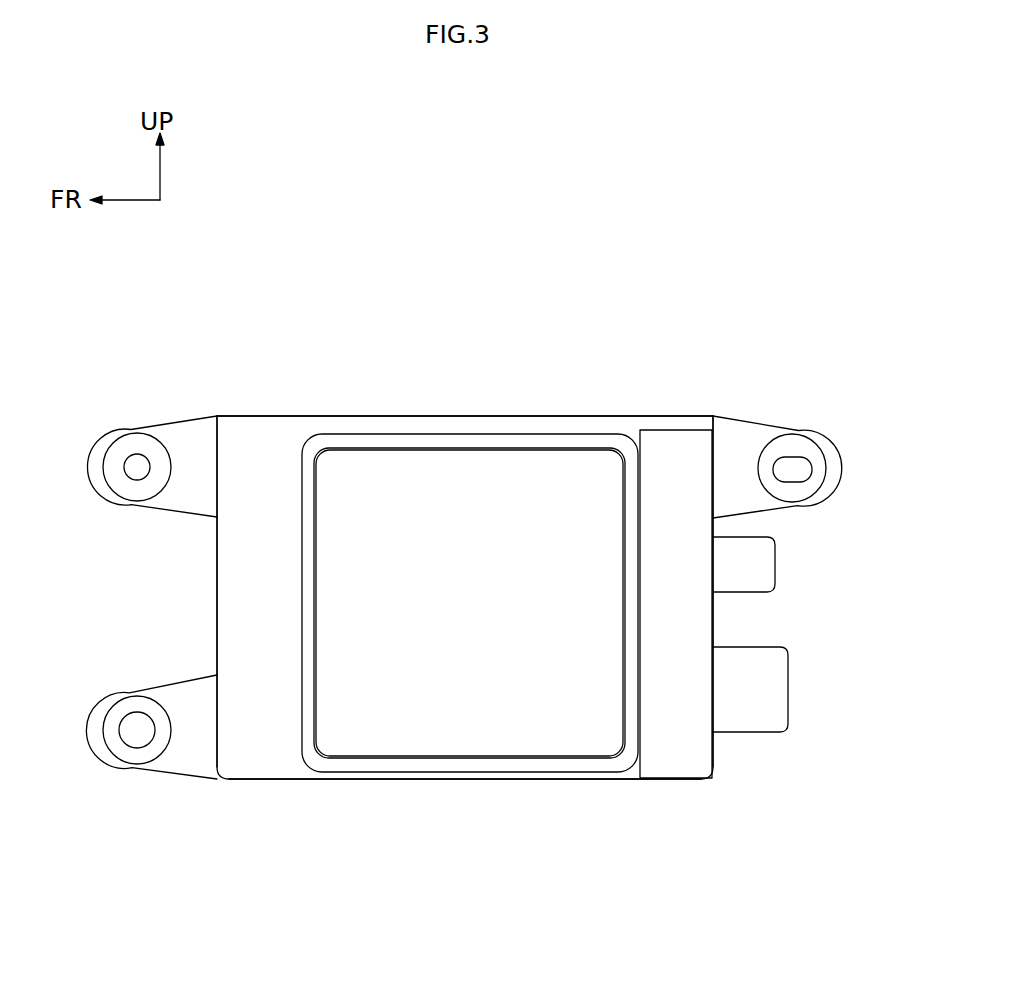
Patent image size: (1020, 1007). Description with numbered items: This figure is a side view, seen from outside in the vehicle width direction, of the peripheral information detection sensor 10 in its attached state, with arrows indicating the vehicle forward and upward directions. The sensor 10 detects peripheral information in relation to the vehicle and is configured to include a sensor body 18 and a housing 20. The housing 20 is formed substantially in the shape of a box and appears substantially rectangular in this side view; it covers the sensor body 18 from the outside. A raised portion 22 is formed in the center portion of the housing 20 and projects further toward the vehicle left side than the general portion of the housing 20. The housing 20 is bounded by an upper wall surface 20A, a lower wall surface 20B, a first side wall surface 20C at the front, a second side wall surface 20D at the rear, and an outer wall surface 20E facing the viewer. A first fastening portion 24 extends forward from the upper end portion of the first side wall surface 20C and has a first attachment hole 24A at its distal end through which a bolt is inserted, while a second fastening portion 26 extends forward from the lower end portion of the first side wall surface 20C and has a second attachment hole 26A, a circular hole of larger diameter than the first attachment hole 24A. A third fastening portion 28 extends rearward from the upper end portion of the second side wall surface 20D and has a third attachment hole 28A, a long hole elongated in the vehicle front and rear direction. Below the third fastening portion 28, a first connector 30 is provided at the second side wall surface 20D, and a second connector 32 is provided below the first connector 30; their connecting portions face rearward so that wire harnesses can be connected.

The peripheral information detection sensor 10 is at (283, 320).
The sensor body 18 is at (534, 478).
The housing 20 is at (373, 410).
The upper wall surface 20A is at (459, 416).
The lower wall surface 20B is at (473, 780).
The first side wall surface 20C is at (215, 610).
The second side wall surface 20D is at (716, 620).
The outer wall surface 20E is at (668, 720).
The raised portion 22 is at (301, 718).
The first fastening portion 24 is at (177, 410).
The first attachment hole 24A is at (136, 472).
The second fastening portion 26 is at (182, 781).
The second attachment hole 26A is at (137, 735).
The third fastening portion 28 is at (748, 415).
The third attachment hole 28A is at (800, 478).
The first connector 30 is at (776, 566).
The second connector 32 is at (789, 692).